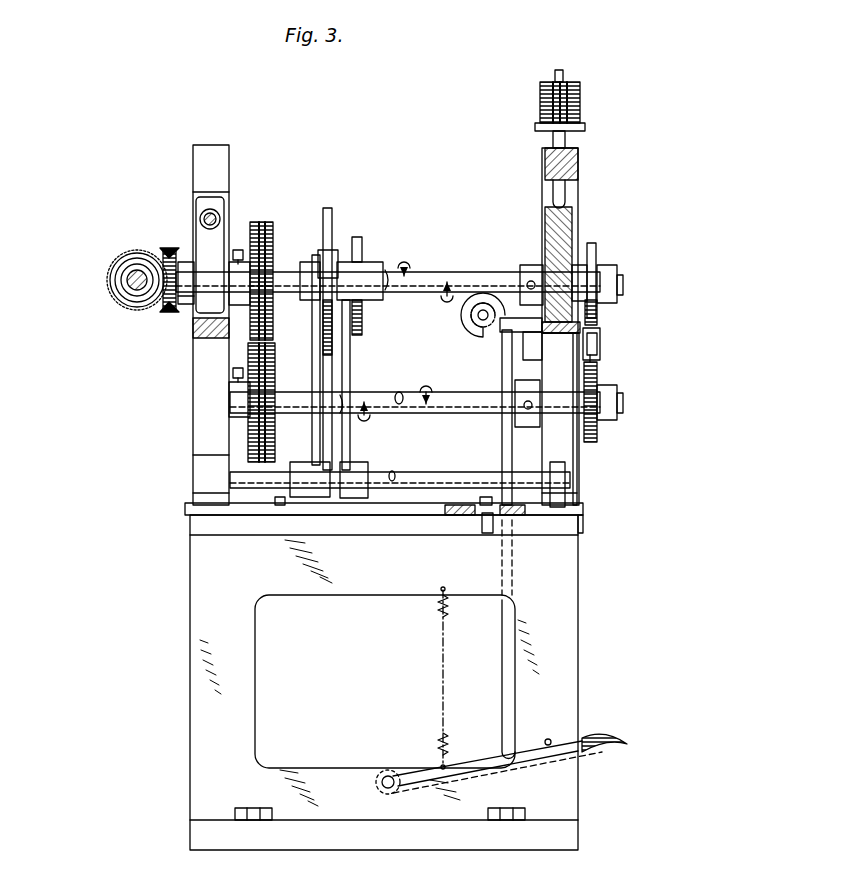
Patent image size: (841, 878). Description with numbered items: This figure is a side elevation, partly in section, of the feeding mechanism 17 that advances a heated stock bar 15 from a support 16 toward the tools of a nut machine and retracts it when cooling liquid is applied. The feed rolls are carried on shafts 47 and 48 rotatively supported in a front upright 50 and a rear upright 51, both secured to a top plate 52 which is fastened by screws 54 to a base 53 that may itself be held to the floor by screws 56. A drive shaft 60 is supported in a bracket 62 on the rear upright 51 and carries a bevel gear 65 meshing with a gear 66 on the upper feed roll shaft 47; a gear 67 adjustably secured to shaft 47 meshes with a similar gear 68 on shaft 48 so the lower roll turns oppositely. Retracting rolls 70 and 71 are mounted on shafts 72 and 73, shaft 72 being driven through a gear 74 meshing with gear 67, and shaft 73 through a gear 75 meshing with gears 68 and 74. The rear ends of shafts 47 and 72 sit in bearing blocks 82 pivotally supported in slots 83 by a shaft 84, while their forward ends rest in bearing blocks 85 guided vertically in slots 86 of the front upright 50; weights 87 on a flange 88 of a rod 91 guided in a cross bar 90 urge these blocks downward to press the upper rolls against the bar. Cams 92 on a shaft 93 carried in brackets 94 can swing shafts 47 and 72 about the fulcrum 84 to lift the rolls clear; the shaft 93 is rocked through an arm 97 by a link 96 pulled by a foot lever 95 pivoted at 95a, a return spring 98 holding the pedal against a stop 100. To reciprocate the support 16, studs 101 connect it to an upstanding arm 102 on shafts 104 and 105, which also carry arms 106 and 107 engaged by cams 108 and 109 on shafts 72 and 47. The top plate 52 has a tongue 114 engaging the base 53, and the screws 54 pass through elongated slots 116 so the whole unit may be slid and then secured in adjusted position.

The feeding mechanism 17 is at (197, 106).
The rear upright 51 is at (200, 404).
The bearing block 82 is at (198, 226).
The shaft 84 is at (214, 218).
The bracket 62 is at (198, 322).
The slot 83 is at (196, 210).
The shaft 60 is at (128, 284).
The bevel gear 65 is at (122, 257).
The gear 66 is at (165, 250).
The gear 74 is at (262, 224).
The gear 75 is at (270, 438).
The gear 67 is at (275, 236).
The gear 68 is at (250, 434).
The upstanding arm 106 is at (312, 348).
The cam 108 is at (327, 208).
The upstanding arm 107 is at (348, 366).
The cam 109 is at (357, 237).
The shaft 72 is at (368, 272).
The shaft 47 is at (396, 270).
The shaft 48 is at (391, 394).
The shaft 73 is at (412, 406).
The shaft 105 is at (381, 472).
The shaft 104 is at (447, 478).
The screw 54 is at (484, 496).
The cam 92 is at (463, 312).
The shaft 93 is at (480, 318).
The bracket 94 is at (513, 326).
The arm 97 is at (510, 288).
The slot 86 is at (542, 197).
The cross bar 90 is at (573, 166).
The rod 91 is at (566, 142).
The bearing block 85 is at (548, 230).
The weight 87 is at (582, 95).
The flange 88 is at (538, 130).
The front upright 50 is at (548, 364).
The retracting roll 70 is at (594, 254).
The bar 15 is at (598, 338).
The support 16 is at (600, 352).
The stud 101 is at (602, 382).
The retracting roll 71 is at (598, 434).
The upstanding arm 102 is at (566, 446).
The link 96 is at (506, 428).
The top plate 52 is at (390, 516).
The elongated slot 116 is at (483, 520).
The tongue 114 is at (582, 532).
The base 53 is at (192, 697).
The screw 56 is at (250, 812).
The return spring 98 is at (440, 742).
The stop 100 is at (548, 739).
The pivot 95a is at (386, 776).
The foot lever 95 is at (605, 738).